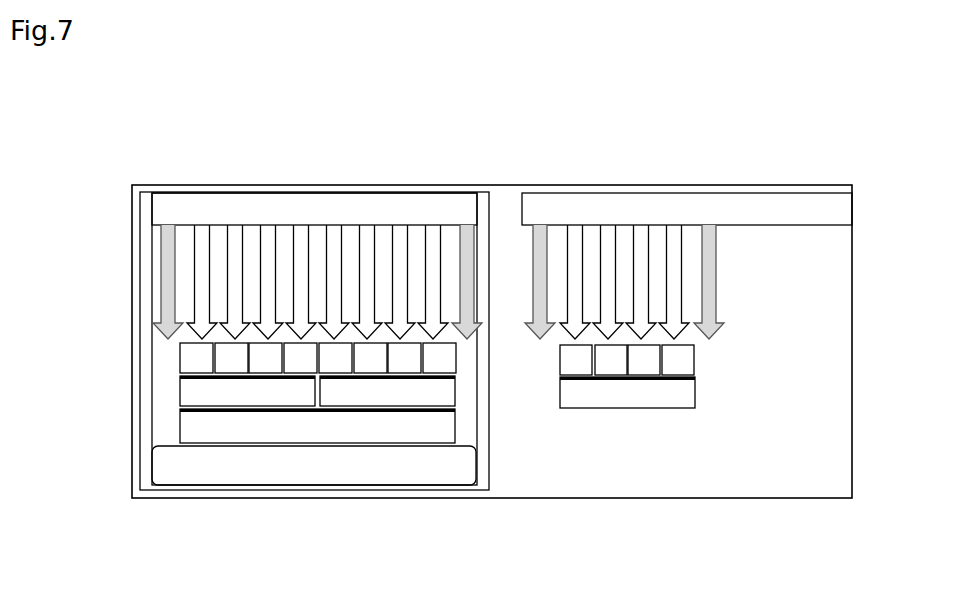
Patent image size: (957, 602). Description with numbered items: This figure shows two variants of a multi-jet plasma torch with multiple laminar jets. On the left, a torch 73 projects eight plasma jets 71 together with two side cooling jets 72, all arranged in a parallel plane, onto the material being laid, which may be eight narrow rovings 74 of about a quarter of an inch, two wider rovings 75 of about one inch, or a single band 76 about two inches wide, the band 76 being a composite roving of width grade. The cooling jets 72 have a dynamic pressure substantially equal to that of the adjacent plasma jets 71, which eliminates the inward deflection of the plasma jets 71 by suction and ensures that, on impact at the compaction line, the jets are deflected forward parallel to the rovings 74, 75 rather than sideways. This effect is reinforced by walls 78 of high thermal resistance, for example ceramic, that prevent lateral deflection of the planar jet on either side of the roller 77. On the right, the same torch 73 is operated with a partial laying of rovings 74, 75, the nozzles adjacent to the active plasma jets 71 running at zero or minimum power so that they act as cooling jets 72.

The plasma jets 71 is at (240, 242).
The cooling jets 72 is at (163, 240).
The torch 73 is at (290, 205).
The rovings 74 is at (220, 350).
The rovings 75 is at (195, 389).
The band 76 is at (192, 425).
The roller 77 is at (300, 468).
The walls 78 is at (143, 417).